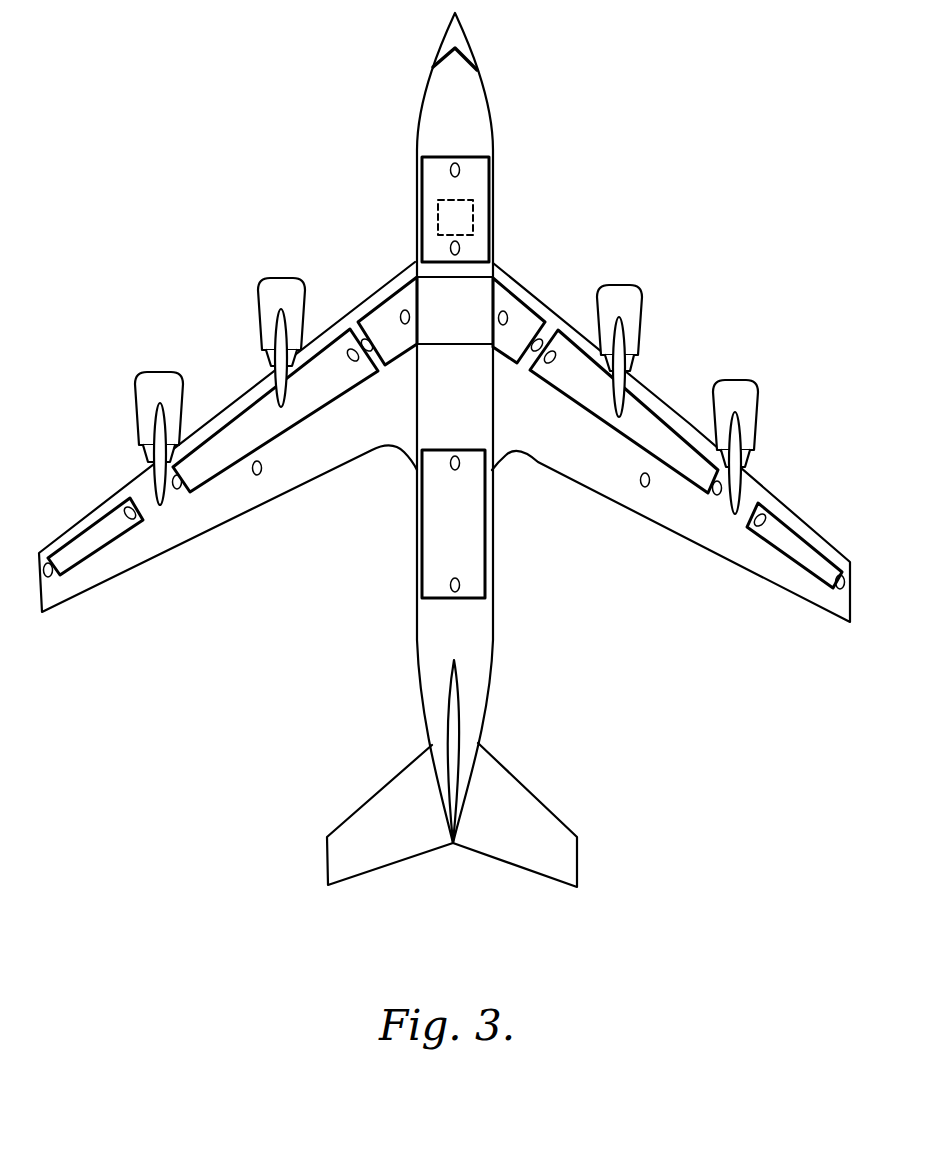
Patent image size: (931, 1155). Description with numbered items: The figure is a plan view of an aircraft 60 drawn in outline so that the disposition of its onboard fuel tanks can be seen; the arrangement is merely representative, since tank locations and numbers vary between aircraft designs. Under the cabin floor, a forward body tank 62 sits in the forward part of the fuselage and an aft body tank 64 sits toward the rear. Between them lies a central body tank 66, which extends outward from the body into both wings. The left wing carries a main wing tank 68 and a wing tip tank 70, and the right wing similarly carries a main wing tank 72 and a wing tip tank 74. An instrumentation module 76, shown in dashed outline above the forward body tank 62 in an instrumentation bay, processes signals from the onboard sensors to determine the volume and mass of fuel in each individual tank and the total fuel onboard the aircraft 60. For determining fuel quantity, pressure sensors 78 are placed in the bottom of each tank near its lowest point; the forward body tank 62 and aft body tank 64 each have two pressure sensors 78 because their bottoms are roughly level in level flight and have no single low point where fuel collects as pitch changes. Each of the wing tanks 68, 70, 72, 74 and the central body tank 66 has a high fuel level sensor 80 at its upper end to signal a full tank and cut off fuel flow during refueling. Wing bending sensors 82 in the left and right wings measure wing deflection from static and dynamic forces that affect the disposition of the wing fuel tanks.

The aircraft 60 is at (314, 653).
The forward body tank 62 is at (480, 182).
The aft body tank 64 is at (473, 557).
The central body tank 66 is at (477, 292).
The main wing tank 68 is at (250, 413).
The wing tip tank 70 is at (87, 537).
The main wing tank 72 is at (640, 417).
The wing tip tank 74 is at (790, 537).
The instrumentation module 76 is at (470, 218).
The pressure sensors 78 is at (450, 170).
The high fuel level sensors 80 is at (50, 578).
The wing bending sensors 82 is at (257, 476).